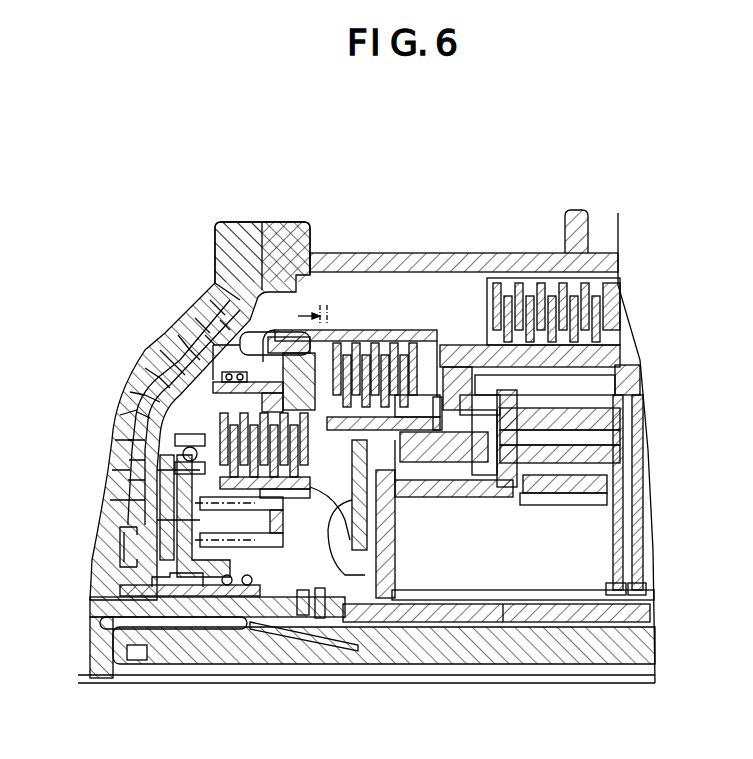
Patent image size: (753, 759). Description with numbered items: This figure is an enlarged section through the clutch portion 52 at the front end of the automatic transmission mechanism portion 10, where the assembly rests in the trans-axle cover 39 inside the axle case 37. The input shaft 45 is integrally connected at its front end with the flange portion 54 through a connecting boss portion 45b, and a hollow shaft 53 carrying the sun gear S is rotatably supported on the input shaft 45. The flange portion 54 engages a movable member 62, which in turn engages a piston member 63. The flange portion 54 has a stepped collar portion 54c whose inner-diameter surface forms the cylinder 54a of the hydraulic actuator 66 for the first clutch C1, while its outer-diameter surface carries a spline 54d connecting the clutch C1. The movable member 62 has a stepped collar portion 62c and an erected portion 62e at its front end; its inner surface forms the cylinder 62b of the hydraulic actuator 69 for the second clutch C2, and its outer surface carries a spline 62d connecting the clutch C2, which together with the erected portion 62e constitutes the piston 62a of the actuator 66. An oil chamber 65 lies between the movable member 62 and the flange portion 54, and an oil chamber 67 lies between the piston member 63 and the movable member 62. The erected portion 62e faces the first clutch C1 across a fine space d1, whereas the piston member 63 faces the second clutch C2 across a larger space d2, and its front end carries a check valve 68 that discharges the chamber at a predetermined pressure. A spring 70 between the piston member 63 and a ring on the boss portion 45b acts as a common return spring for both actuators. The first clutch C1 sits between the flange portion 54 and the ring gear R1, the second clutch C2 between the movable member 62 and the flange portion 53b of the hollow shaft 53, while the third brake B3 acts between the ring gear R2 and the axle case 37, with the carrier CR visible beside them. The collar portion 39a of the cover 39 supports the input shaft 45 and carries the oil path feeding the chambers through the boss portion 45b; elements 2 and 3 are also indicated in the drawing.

The automatic transmission mechanism portion 10 is at (128, 206).
The second planetary gear set 2 is at (430, 380).
The third planetary gear set 3 is at (470, 332).
The axle case 37 is at (337, 258).
The trans-axle cover 39 is at (177, 358).
The collar portion 39a is at (160, 640).
The input shaft 45 is at (435, 655).
The connecting boss portion 45b is at (133, 593).
The clutch portion 52 is at (200, 252).
The hollow shaft 53 is at (548, 615).
The flange portion 53b is at (310, 630).
The flange portion 54 is at (232, 342).
The cylinder 54a is at (143, 380).
The stepped collar portion 54c is at (228, 332).
The spline 54d is at (358, 333).
The movable member 62 is at (162, 510).
The piston 62a is at (262, 362).
The cylinder 62b is at (155, 410).
The stepped collar portion 62c is at (240, 320).
The spline 62d is at (283, 507).
The erected portion 62e is at (300, 352).
The piston member 63 is at (180, 540).
The oil chamber 65 is at (180, 453).
The hydraulic actuator 66 is at (180, 360).
The oil chamber 67 is at (200, 578).
The check valve 68 is at (165, 478).
The hydraulic actuator 69 is at (180, 528).
The spring 70 is at (270, 640).
The first clutch C1 is at (380, 360).
The second clutch C2 is at (165, 440).
The third brake B3 is at (549, 290).
The ring gear R1 is at (413, 417).
The ring gear R2 is at (523, 280).
The sun gear S is at (483, 598).
The carrier CR is at (390, 590).
The fine space d1 is at (332, 314).
The larger space d2 is at (215, 518).